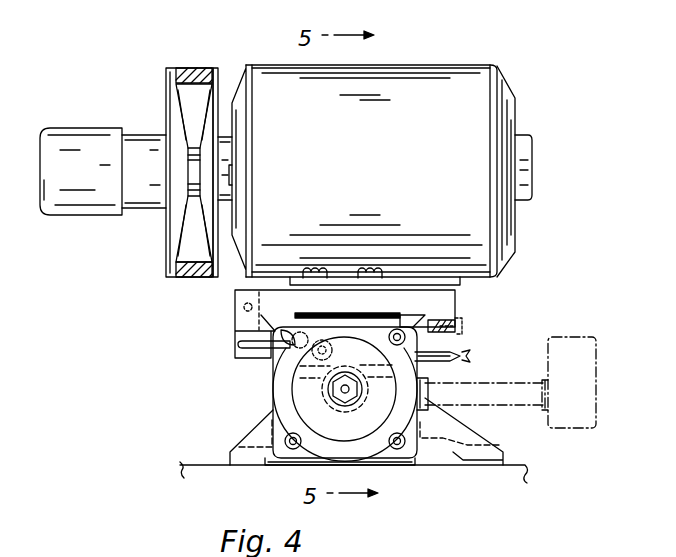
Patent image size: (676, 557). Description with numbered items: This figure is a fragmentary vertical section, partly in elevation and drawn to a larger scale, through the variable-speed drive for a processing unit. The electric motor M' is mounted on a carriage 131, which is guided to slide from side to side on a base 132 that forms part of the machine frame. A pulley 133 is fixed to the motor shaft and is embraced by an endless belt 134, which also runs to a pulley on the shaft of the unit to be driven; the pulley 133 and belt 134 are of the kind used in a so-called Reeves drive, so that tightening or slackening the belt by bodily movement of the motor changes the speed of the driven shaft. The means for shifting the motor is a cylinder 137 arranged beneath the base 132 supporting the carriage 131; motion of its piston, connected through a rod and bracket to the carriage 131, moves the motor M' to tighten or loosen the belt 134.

The pulley 133 is at (172, 97).
The endless belt 134 is at (192, 68).
The electric motor M' is at (380, 153).
The carriage 131 is at (455, 306).
The base 132 is at (423, 331).
The cylinder 137 is at (313, 401).